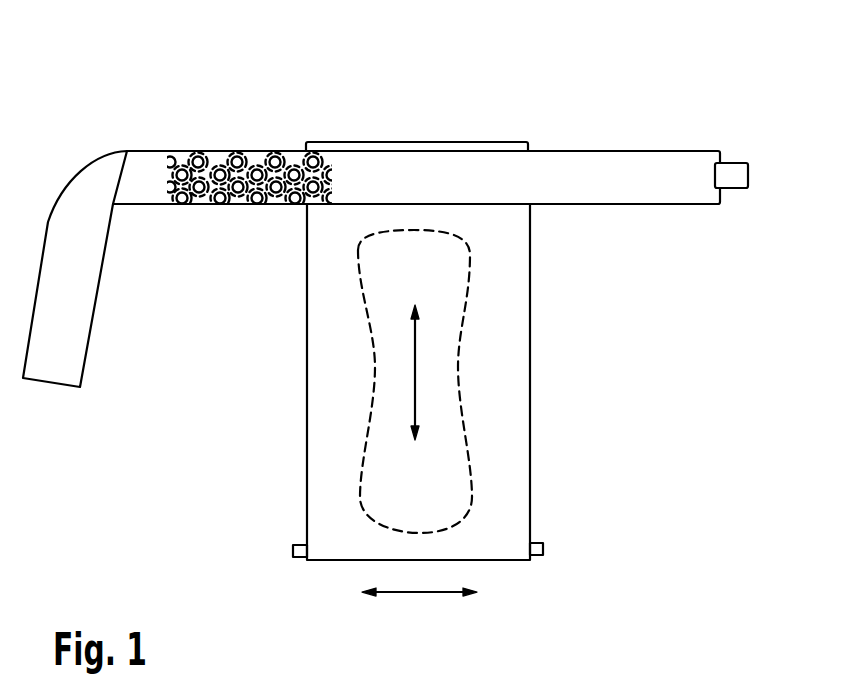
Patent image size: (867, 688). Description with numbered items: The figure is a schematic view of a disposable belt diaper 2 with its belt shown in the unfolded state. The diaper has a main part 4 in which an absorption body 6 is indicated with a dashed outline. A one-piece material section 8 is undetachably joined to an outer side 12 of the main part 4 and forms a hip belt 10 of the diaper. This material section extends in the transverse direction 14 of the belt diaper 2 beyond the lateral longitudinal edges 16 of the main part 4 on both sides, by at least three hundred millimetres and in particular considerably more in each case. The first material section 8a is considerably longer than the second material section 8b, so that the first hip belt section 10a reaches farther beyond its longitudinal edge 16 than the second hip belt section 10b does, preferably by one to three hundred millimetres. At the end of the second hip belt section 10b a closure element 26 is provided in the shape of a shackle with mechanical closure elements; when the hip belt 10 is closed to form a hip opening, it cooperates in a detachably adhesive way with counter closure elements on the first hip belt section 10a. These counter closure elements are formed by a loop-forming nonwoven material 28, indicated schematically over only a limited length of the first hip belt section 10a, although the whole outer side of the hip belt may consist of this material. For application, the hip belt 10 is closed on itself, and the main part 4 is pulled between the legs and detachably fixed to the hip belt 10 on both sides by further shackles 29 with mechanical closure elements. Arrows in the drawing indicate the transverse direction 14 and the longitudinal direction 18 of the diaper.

The disposable belt diaper 2 is at (258, 116).
The main part 4 is at (422, 382).
The absorption body 6 is at (460, 424).
The one-piece material section 8 is at (371, 226).
The hip belt 10 is at (371, 226).
The first material section 8a is at (164, 226).
The first hip belt section 10a is at (145, 163).
The second material section 8b is at (625, 134).
The second hip belt section 10b is at (638, 157).
The outer side 12 is at (422, 382).
The transverse direction 14 is at (419, 611).
The lateral longitudinal edges 16 is at (306, 305).
The longitudinal direction 18 is at (414, 364).
The closure element 26 is at (732, 170).
The loop-forming nonwoven material 28 is at (192, 207).
The further shackles 29 is at (297, 546).